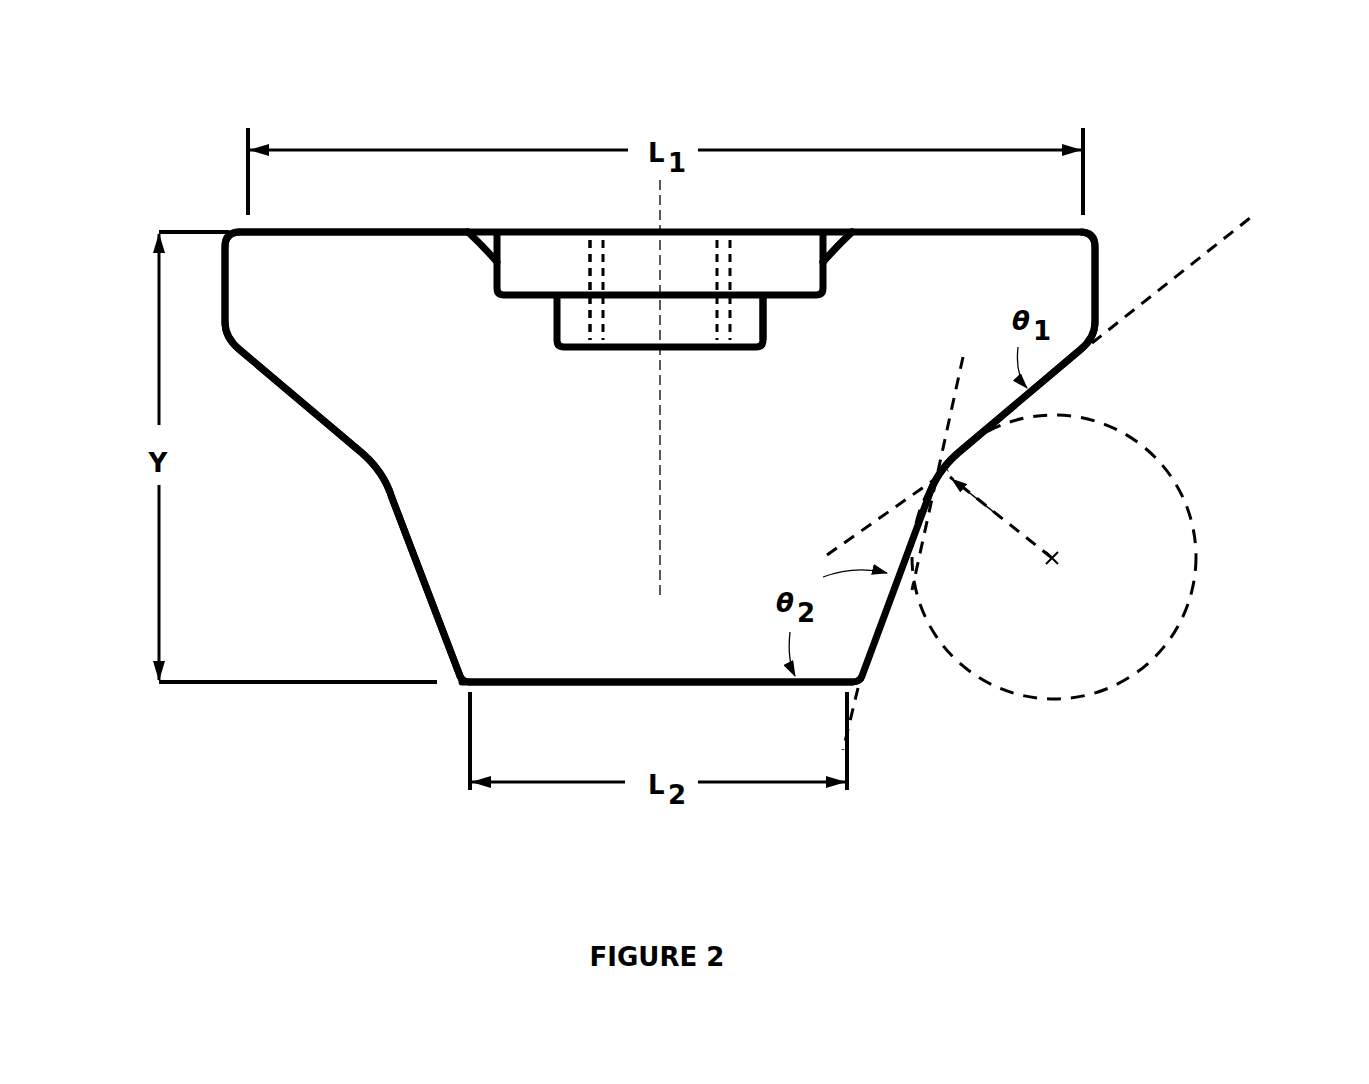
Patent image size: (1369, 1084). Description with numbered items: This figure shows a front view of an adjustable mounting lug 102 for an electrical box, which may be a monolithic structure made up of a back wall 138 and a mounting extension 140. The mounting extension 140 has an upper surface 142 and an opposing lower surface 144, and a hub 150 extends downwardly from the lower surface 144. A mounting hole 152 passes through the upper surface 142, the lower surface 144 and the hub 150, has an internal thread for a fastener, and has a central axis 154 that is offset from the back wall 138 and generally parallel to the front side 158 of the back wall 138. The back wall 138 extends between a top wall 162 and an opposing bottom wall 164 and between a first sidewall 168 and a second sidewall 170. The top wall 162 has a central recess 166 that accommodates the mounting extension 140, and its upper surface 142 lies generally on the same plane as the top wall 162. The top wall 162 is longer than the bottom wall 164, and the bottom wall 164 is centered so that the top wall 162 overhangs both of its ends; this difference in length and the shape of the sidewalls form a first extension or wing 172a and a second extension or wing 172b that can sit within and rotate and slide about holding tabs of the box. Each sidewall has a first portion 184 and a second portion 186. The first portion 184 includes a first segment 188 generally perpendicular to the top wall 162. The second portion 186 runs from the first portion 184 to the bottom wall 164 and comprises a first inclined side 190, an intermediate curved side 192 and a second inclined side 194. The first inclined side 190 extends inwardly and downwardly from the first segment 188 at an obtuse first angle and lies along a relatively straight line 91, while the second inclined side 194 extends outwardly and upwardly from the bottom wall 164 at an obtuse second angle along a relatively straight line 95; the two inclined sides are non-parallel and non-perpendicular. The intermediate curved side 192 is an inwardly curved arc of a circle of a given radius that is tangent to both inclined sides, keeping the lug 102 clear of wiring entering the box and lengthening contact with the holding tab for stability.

The straight line 91 is at (1250, 218).
The straight line 95 is at (950, 390).
The adjustable mounting lug 102 is at (945, 833).
The back wall 138 is at (470, 663).
The mounting extension 140 is at (777, 253).
The upper surface 142 is at (748, 232).
The lower surface 144 is at (783, 333).
The hub 150 is at (555, 328).
The mounting hole 152 is at (630, 262).
The central axis 154 is at (660, 542).
The front side 158 is at (448, 582).
The top wall 162 is at (317, 230).
The bottom wall 164 is at (752, 685).
The recess 166 is at (837, 232).
The first sidewall 168 is at (228, 318).
The second sidewall 170 is at (1098, 255).
The first extension or wing 172a is at (325, 380).
The second extension or wing 172b is at (970, 410).
The first portion 184 is at (194, 267).
The second portion 186 is at (298, 608).
The first segment 188 is at (232, 262).
The first inclined side 190 is at (243, 362).
The intermediate curved side 192 is at (378, 478).
The second inclined side 194 is at (443, 637).